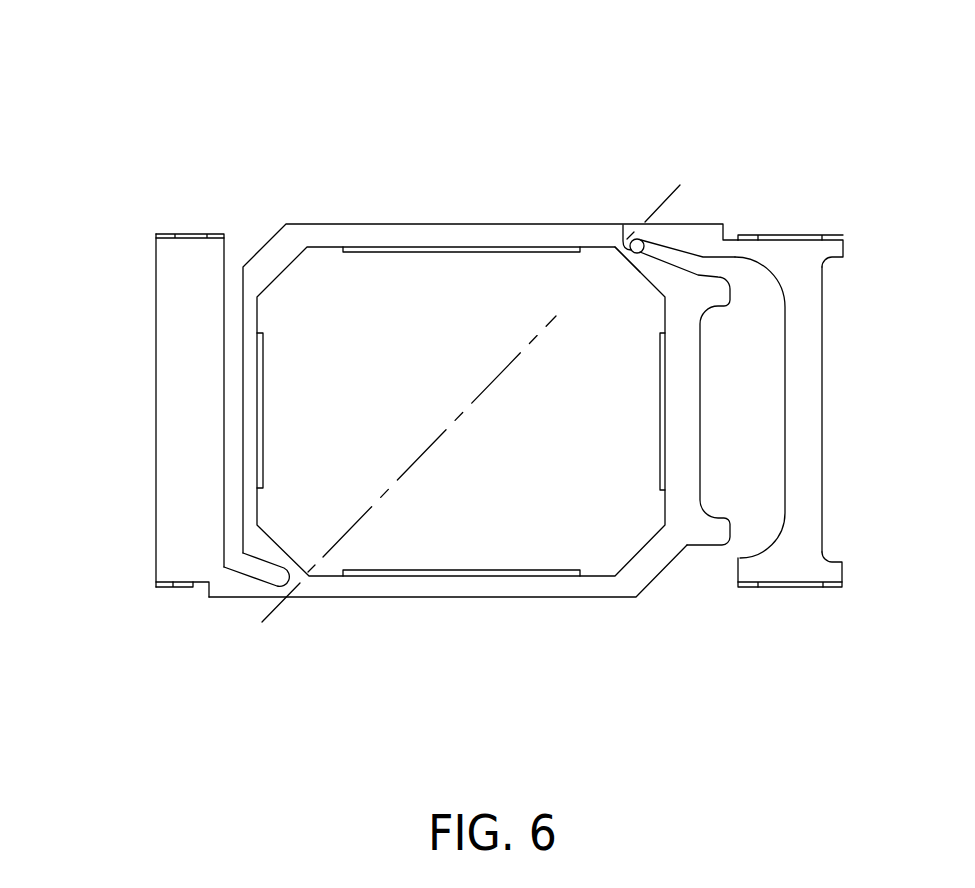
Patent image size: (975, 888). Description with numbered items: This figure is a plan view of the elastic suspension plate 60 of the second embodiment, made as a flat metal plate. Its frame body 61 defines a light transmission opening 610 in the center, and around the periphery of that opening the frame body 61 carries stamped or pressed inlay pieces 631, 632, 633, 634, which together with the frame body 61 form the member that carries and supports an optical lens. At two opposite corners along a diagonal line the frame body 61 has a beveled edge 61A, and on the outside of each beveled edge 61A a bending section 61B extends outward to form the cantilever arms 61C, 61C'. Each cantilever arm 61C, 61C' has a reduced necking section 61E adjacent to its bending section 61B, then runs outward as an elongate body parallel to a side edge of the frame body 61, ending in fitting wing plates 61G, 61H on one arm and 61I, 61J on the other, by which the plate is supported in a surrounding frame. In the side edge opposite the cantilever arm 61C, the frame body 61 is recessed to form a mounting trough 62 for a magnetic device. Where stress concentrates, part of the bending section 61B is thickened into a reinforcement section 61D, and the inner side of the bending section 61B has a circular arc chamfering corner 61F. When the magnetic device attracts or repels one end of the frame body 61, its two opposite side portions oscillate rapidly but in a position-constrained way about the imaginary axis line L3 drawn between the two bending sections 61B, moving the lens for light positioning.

The elastic suspension plate 60 is at (444, 184).
The frame body 61 is at (388, 240).
The light transmission opening 610 is at (550, 538).
The inlay piece 631 is at (435, 248).
The inlay piece 632 is at (660, 443).
The inlay piece 633 is at (413, 570).
The inlay piece 634 is at (262, 412).
The beveled edge 61A is at (641, 253).
The bending section 61B is at (624, 241).
The cantilever arm 61C is at (827, 411).
The cantilever arm 61C' is at (136, 408).
The reinforcement section 61D is at (615, 248).
The reduced necking section 61E is at (667, 233).
The circular arc chamfering corner 61F is at (615, 248).
The fitting wing plate 61G is at (797, 583).
The fitting wing plate 61H is at (792, 235).
The fitting wing plate 61I is at (173, 585).
The fitting wing plate 61J is at (190, 235).
The mounting trough 62 is at (690, 400).
The imaginary axis line L3 is at (292, 598).